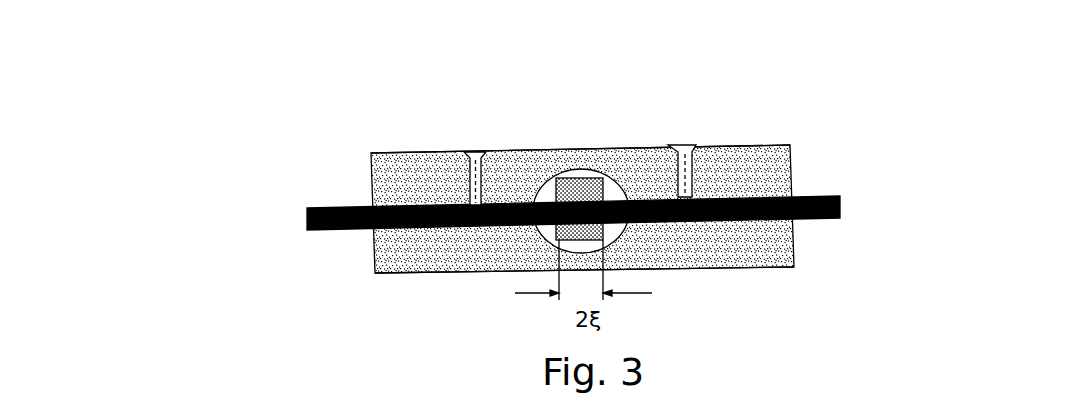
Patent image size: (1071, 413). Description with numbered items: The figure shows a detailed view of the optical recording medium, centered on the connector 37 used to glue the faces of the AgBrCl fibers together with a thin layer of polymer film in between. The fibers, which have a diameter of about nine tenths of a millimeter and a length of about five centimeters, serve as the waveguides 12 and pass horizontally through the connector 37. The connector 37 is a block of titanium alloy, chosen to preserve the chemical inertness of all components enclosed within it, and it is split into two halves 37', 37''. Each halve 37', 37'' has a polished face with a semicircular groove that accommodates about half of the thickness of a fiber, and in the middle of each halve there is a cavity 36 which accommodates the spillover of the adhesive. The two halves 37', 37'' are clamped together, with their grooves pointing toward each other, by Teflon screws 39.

The waveguides 12 is at (352, 210).
The cavity 36 is at (573, 178).
The connector 37 is at (582, 209).
The halve of connector 37' is at (571, 299).
The halve of connector 37'' is at (561, 115).
The Teflon screws 39 is at (371, 45).